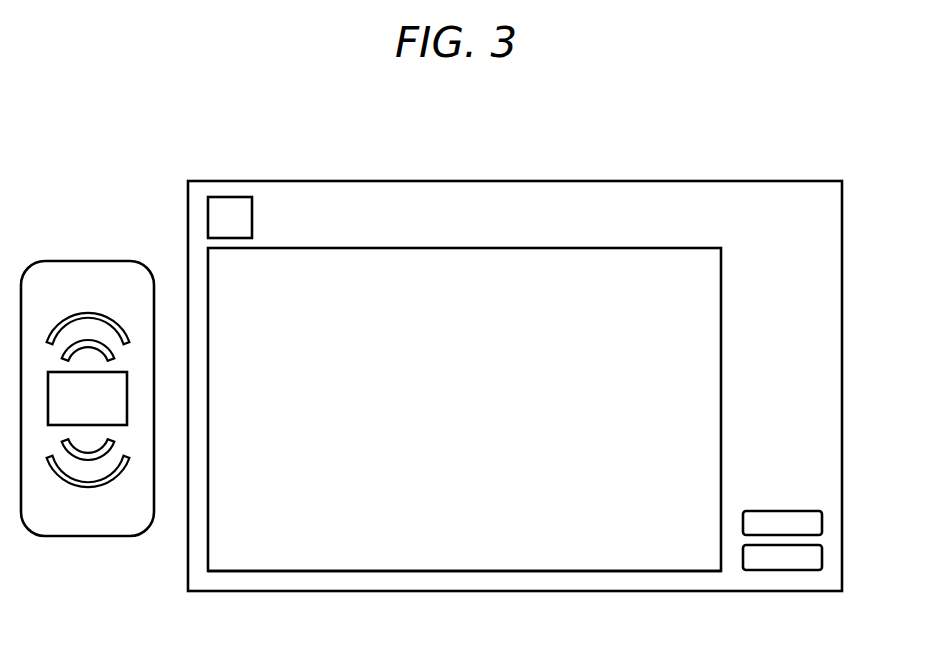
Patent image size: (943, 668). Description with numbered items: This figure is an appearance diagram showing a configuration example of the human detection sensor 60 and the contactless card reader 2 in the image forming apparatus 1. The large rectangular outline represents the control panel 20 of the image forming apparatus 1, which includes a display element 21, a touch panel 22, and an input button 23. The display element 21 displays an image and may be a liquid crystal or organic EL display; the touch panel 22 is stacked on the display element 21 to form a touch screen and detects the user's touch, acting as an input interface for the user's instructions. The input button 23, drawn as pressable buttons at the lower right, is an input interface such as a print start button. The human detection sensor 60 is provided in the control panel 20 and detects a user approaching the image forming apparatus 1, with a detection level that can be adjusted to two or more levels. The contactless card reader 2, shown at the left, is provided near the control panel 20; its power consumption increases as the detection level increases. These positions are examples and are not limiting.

The image forming apparatus 1 is at (539, 364).
The contactless card reader 2 is at (91, 261).
The control panel 20 is at (758, 181).
The display element 21 is at (343, 248).
The touch panel 22 is at (524, 543).
The input button 23 is at (823, 522).
The human detection sensor 60 is at (236, 197).